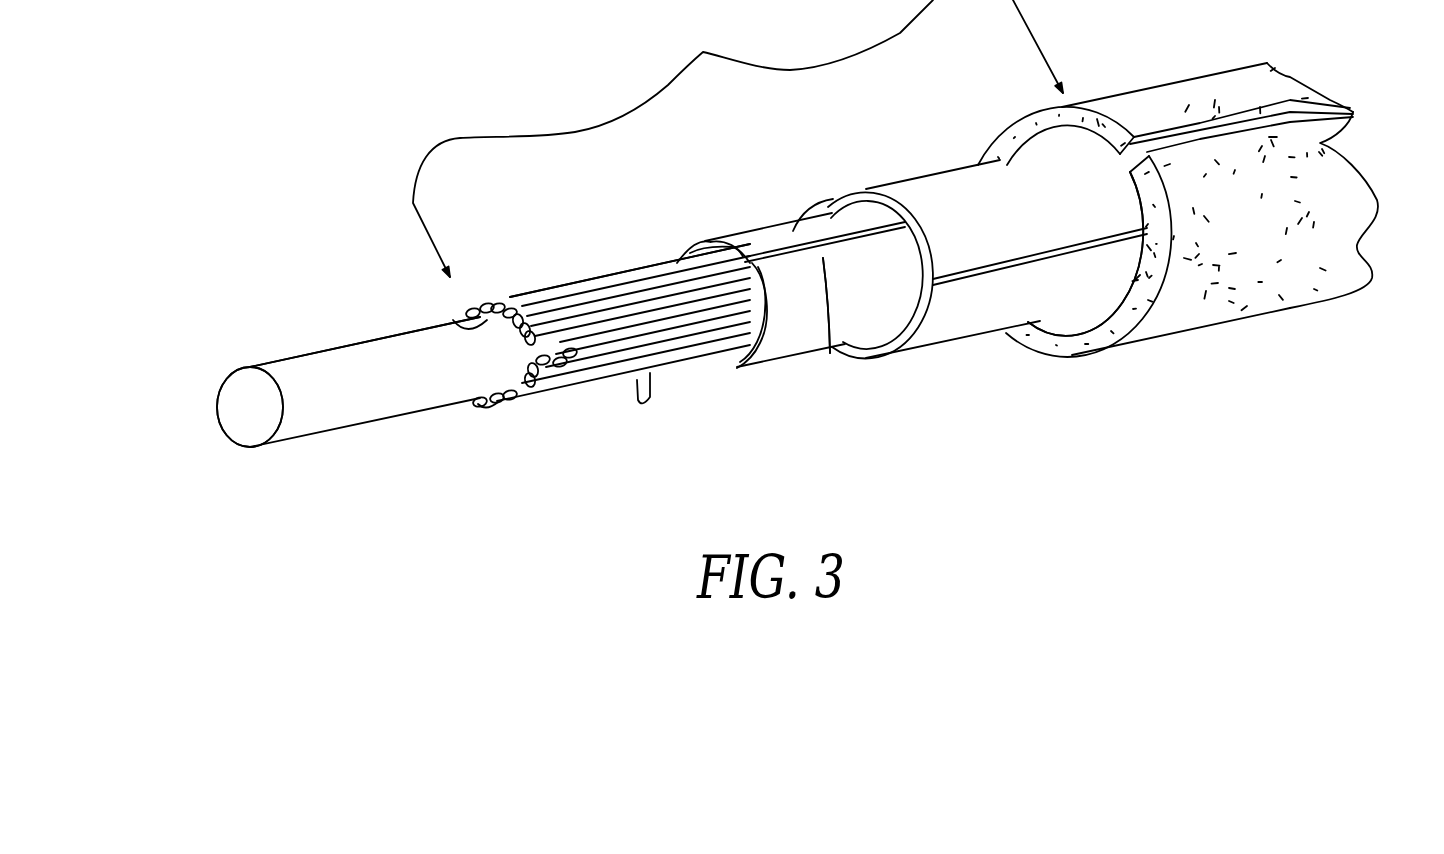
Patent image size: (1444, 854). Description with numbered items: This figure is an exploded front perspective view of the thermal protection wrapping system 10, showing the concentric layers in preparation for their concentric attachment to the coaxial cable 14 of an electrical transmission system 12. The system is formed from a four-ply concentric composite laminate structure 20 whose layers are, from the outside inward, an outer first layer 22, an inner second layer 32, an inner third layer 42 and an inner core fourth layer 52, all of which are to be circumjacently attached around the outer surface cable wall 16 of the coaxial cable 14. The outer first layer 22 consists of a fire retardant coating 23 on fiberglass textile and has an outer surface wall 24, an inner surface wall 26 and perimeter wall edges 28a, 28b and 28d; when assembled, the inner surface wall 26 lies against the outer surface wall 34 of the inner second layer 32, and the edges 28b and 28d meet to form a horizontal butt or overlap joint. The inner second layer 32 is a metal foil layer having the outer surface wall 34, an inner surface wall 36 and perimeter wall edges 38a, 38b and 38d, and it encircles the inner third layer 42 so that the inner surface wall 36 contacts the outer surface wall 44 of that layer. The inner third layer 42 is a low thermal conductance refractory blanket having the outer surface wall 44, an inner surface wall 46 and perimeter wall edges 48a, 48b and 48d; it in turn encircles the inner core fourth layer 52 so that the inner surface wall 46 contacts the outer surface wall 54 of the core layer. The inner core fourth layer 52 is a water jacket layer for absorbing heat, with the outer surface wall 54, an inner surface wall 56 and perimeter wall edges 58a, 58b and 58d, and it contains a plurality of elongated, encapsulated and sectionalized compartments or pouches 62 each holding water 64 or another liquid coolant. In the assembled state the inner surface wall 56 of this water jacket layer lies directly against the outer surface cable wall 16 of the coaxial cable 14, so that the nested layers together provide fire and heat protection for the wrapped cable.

The thermal protection wrapping system 10 is at (311, 209).
The electrical transmission system 12 is at (323, 440).
The coaxial cable 14 is at (223, 417).
The outer surface cable wall 16 is at (282, 383).
The concentric composite laminate structure 20 is at (738, 138).
The outer first layer 22 is at (1168, 80).
The fire retardant coating 23 is at (1030, 123).
The outer surface wall 24 is at (1233, 87).
The inner surface wall 26 is at (1065, 327).
The perimeter wall edge 28a is at (1110, 330).
The perimeter wall edge 28b is at (1323, 95).
The perimeter wall edge 28d is at (1343, 147).
The inner second layer 32 is at (920, 177).
The outer surface wall 34 is at (979, 268).
The inner surface wall 36 is at (810, 228).
The perimeter wall edge 38a is at (933, 332).
The perimeter wall edge 38b is at (1013, 257).
The perimeter wall edge 38d is at (984, 270).
The inner third layer 42 is at (783, 213).
The outer surface wall 44 is at (777, 330).
The inner surface wall 46 is at (667, 267).
The perimeter wall edge 48a is at (717, 367).
The perimeter wall edge 48b is at (777, 227).
The perimeter wall edge 48d is at (833, 353).
The inner core fourth layer 52 is at (633, 260).
The outer surface wall 54 is at (613, 297).
The inner surface wall 56 is at (487, 320).
The perimeter wall edge 58a is at (493, 400).
The perimeter wall edge 58b is at (567, 317).
The perimeter wall edge 58d is at (543, 373).
The compartments/pouches 62 is at (642, 367).
The water 64 is at (578, 370).